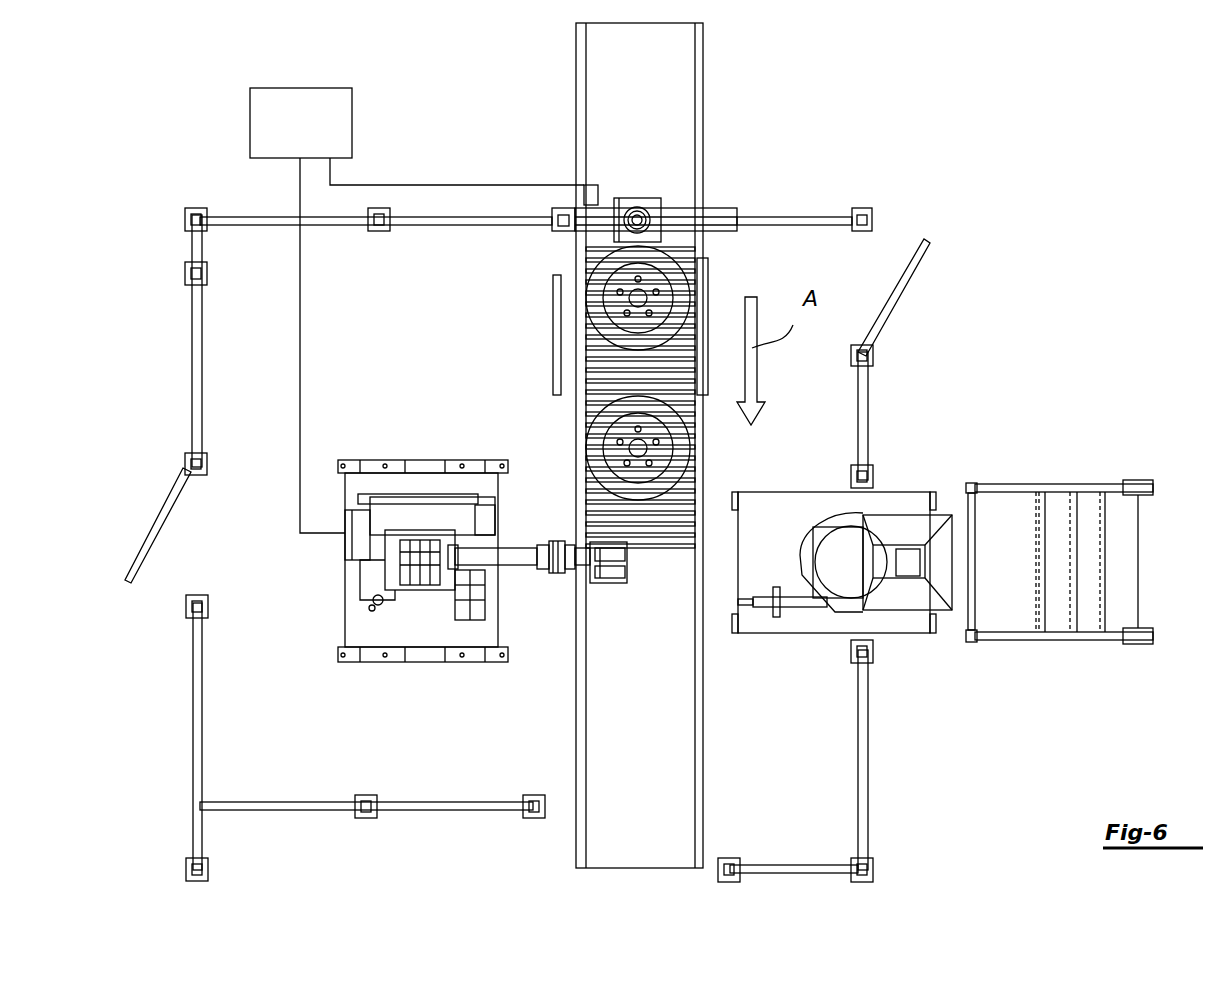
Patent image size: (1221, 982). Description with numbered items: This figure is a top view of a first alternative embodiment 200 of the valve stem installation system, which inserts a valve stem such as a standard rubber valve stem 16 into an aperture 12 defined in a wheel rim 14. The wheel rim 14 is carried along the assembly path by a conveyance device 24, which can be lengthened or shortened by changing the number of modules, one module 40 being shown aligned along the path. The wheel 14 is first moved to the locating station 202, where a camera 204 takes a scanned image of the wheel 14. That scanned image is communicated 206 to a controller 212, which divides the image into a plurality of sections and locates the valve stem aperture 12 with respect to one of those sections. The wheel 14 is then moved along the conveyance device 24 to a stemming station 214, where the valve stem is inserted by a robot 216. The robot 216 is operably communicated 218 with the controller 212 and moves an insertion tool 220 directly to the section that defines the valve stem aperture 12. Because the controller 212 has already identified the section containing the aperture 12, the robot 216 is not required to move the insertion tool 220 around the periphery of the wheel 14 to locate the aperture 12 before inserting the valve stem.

The first alternative embodiment of the system 200 is at (540, 172).
The locating station 202 is at (680, 208).
The camera 204 is at (655, 204).
The communication of the scanned image 206 is at (430, 185).
The controller 212 is at (262, 124).
The stemming station 214 is at (360, 437).
The robot 216 is at (330, 572).
The operable communication between robot and controller 218 is at (300, 387).
The insertion tool 220 is at (605, 584).
The aperture 12 is at (595, 271).
The wheel rim 14 is at (673, 271).
The standard rubber valve stem 16 is at (555, 287).
The conveyance device 24 is at (720, 440).
The module 40 is at (893, 470).